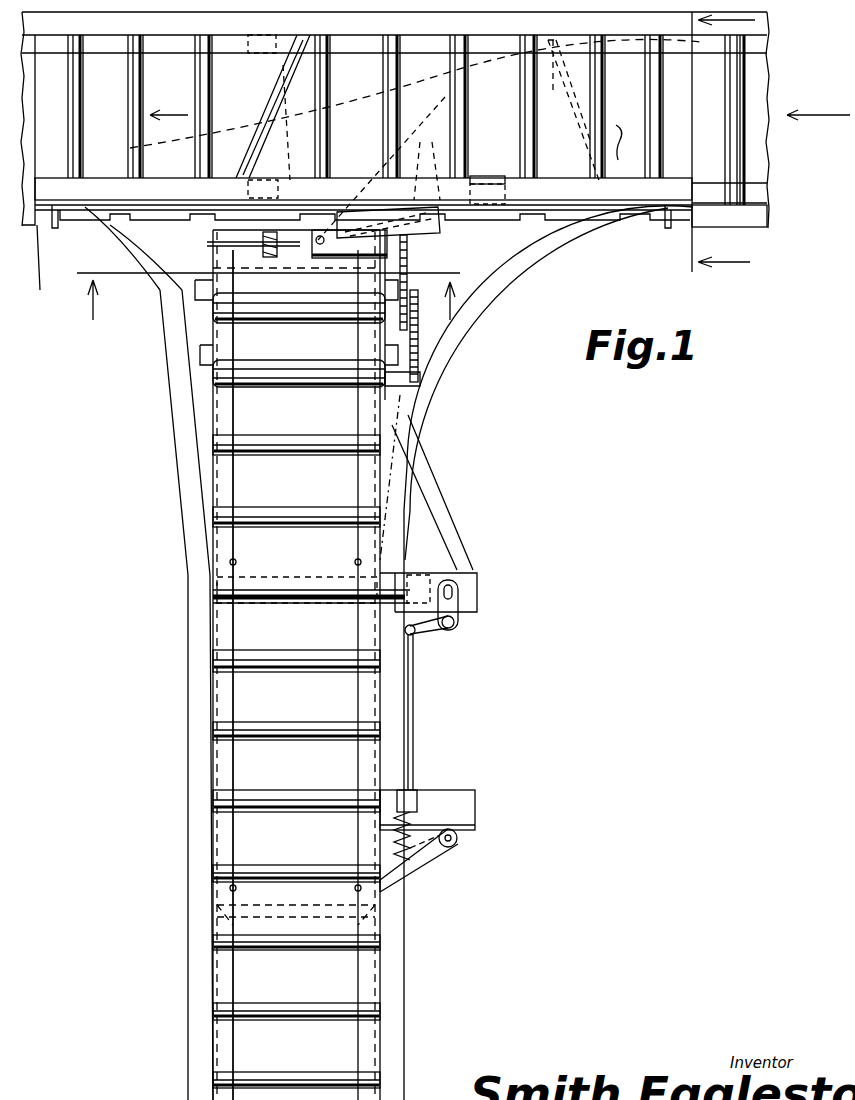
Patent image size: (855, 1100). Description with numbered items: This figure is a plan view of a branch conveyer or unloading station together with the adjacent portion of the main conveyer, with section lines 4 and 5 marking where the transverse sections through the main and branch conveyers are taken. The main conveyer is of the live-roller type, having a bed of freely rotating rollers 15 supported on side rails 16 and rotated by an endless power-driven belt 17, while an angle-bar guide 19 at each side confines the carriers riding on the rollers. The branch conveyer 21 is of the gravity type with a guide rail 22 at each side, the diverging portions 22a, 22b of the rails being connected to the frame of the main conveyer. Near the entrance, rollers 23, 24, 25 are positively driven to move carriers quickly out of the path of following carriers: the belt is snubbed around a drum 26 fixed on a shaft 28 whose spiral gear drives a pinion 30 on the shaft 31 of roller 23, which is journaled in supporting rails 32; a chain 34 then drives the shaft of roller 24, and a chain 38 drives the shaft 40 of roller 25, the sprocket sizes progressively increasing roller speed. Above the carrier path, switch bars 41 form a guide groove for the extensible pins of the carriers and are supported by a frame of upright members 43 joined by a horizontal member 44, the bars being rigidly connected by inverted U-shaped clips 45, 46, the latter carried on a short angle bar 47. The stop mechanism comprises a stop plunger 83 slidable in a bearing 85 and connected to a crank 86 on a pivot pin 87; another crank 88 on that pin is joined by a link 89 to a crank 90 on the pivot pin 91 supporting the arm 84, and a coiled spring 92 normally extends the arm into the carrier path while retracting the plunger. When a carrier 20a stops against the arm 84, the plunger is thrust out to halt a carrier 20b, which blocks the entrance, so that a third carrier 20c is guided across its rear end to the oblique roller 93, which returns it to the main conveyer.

The section line 4— 4 is at (736, 141).
The section line 5— 5 is at (268, 288).
The rollers 15 is at (520, 104).
The side rails 16 is at (758, 50).
The belt 17 is at (752, 165).
The guide 19 is at (750, 220).
The carrier 20a is at (222, 762).
The carrier 20b is at (225, 547).
The carrier 20c is at (560, 78).
The branch conveyer 21 is at (296, 665).
The guide rail 22 is at (186, 642).
The diverging portion of guide rail 22a is at (175, 370).
The diverging portion of guide rail 22b is at (520, 279).
The roller 23 is at (325, 232).
The roller 24 is at (345, 315).
The roller 25 is at (345, 382).
The drum 26 is at (200, 142).
The shaft 28 is at (245, 200).
The pinion 30 is at (112, 244).
The shaft 31 is at (207, 243).
The supporting rails 32 is at (228, 410).
The chain 34 is at (408, 254).
The chain 38 is at (418, 340).
The shaft 40 is at (425, 372).
The switch bars 41 is at (427, 163).
The upright members 43 is at (55, 230).
The horizontal member 44 is at (617, 139).
The clip 45 is at (488, 176).
The clip 46 is at (381, 165).
The angle bar 47 is at (441, 230).
The stop plunger 83 is at (415, 560).
The arm 84 is at (385, 886).
The bearing 85 is at (420, 568).
The crank 86 is at (460, 597).
The pivot pin 87 is at (455, 628).
The crank 88 is at (432, 632).
The link 89 is at (415, 738).
The crank 90 is at (430, 815).
The pivot pin 91 is at (460, 838).
The coiled spring 92 is at (395, 838).
The oblique roller 93 is at (262, 85).